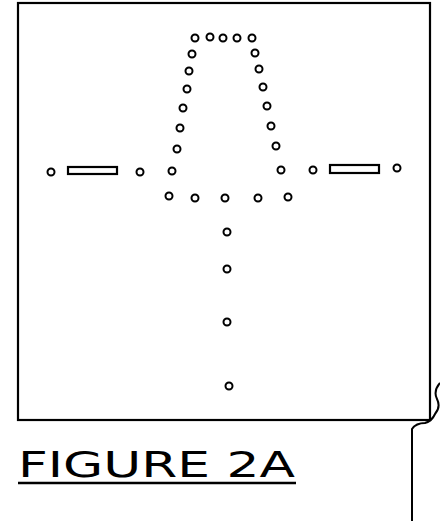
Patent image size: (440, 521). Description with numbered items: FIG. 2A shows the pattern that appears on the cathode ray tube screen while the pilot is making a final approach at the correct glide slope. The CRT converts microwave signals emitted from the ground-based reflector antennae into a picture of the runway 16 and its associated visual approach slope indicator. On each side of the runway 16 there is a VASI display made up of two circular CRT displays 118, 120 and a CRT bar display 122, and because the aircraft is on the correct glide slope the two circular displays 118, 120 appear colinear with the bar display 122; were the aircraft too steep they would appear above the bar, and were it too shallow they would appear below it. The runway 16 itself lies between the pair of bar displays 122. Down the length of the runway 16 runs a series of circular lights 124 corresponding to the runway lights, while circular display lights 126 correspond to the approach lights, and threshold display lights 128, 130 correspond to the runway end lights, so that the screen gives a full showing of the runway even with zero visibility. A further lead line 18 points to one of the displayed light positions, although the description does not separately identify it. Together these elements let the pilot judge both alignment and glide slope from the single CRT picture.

The runway 16 is at (215, 118).
The conductor hole 18 is at (275, 127).
The circular CRT display 118 is at (51, 176).
The circular CRT display 120 is at (140, 176).
The CRT bar display 122 is at (93, 175).
The circular lights 124 is at (262, 66).
The circular display lights 126 is at (231, 321).
The threshold display lights 128 is at (195, 202).
The threshold display lights 130 is at (207, 34).